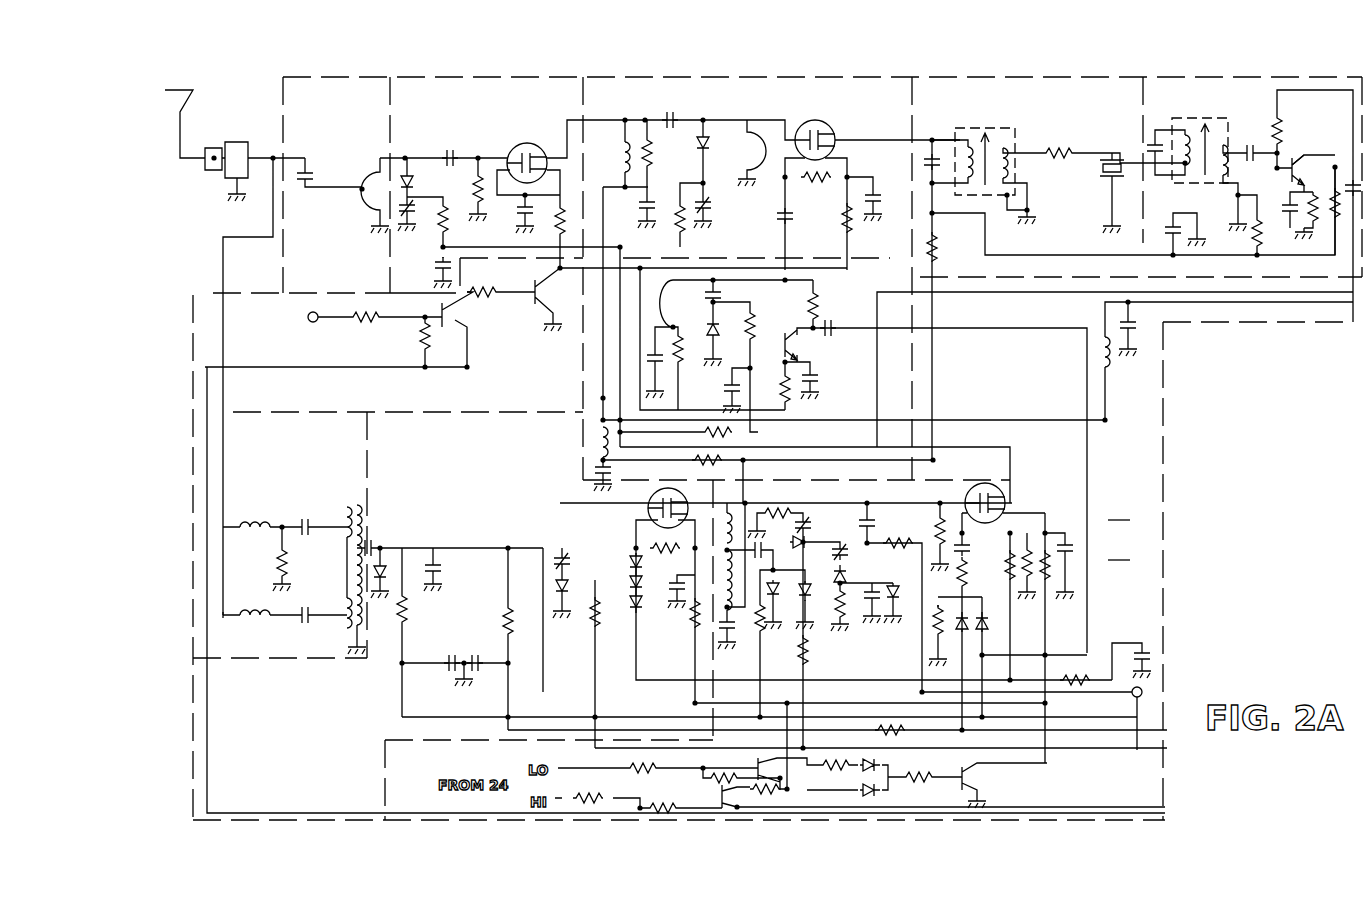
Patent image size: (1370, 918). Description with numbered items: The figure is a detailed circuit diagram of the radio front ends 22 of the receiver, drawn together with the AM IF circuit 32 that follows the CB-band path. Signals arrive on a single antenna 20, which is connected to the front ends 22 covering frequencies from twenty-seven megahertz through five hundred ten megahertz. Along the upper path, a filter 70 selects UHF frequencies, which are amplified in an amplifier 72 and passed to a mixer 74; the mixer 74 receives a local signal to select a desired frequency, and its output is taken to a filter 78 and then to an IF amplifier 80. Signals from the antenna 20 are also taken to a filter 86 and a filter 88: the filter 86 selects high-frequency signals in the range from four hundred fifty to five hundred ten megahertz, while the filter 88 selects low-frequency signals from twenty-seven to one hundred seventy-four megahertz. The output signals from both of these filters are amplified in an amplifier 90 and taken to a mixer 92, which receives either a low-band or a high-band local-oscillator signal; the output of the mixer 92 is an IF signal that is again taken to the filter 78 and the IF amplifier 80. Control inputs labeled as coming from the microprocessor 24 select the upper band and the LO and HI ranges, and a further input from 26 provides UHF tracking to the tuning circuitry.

The antenna 20 is at (186, 93).
The filter 70 is at (324, 78).
The amplifier 72 is at (486, 78).
The mixer 74 is at (681, 78).
The filter 78 is at (1031, 78).
The IF amplifier 80 is at (1231, 78).
The filter 86 is at (270, 412).
The filter 88 is at (287, 660).
The amplifier 90 is at (437, 412).
The mixer 92 is at (1030, 480).
The radio front ends 22 is at (1120, 510).
The AM IF circuit 32 is at (1120, 550).
The microprocessor 24 is at (383, 319).
The UHF track input 26 is at (1120, 745).